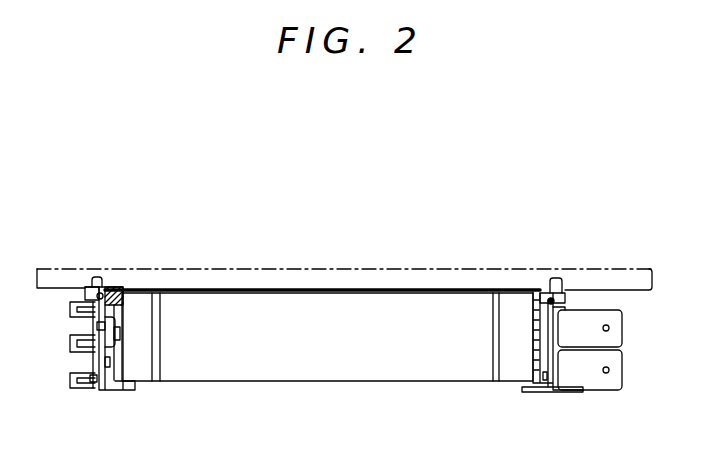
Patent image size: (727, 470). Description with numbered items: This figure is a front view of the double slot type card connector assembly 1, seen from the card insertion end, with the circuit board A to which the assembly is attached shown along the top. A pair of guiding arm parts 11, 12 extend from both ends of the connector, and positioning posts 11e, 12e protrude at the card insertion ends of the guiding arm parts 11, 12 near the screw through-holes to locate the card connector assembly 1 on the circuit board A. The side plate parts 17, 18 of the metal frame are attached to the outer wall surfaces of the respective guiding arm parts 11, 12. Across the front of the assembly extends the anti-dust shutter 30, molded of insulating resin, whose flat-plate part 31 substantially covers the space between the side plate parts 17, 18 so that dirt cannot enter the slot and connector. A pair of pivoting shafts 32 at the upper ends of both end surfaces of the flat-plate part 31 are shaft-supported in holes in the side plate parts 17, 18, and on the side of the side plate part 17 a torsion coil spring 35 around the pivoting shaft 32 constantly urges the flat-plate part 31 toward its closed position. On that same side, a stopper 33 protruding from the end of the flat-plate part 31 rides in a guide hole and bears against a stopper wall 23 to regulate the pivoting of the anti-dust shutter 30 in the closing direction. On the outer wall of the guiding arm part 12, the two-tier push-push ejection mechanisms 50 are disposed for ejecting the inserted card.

The card connector assembly 1 is at (428, 263).
The circuit board A is at (300, 270).
The guiding arm part 11 is at (82, 328).
The positioning post 11e is at (96, 275).
The guiding arm part 12 is at (609, 337).
The positioning post 12e is at (558, 276).
The side plate part 17 is at (99, 360).
The side plate part 18 is at (544, 383).
The stopper wall 23 is at (104, 343).
The anti-dust shutter 30 is at (322, 369).
The flat-plate part 31 is at (238, 360).
The pivoting shaft 32 is at (93, 297).
The stopper 33 is at (97, 327).
The torsion coil spring 35 is at (121, 296).
The ejection mechanism 50 is at (634, 364).